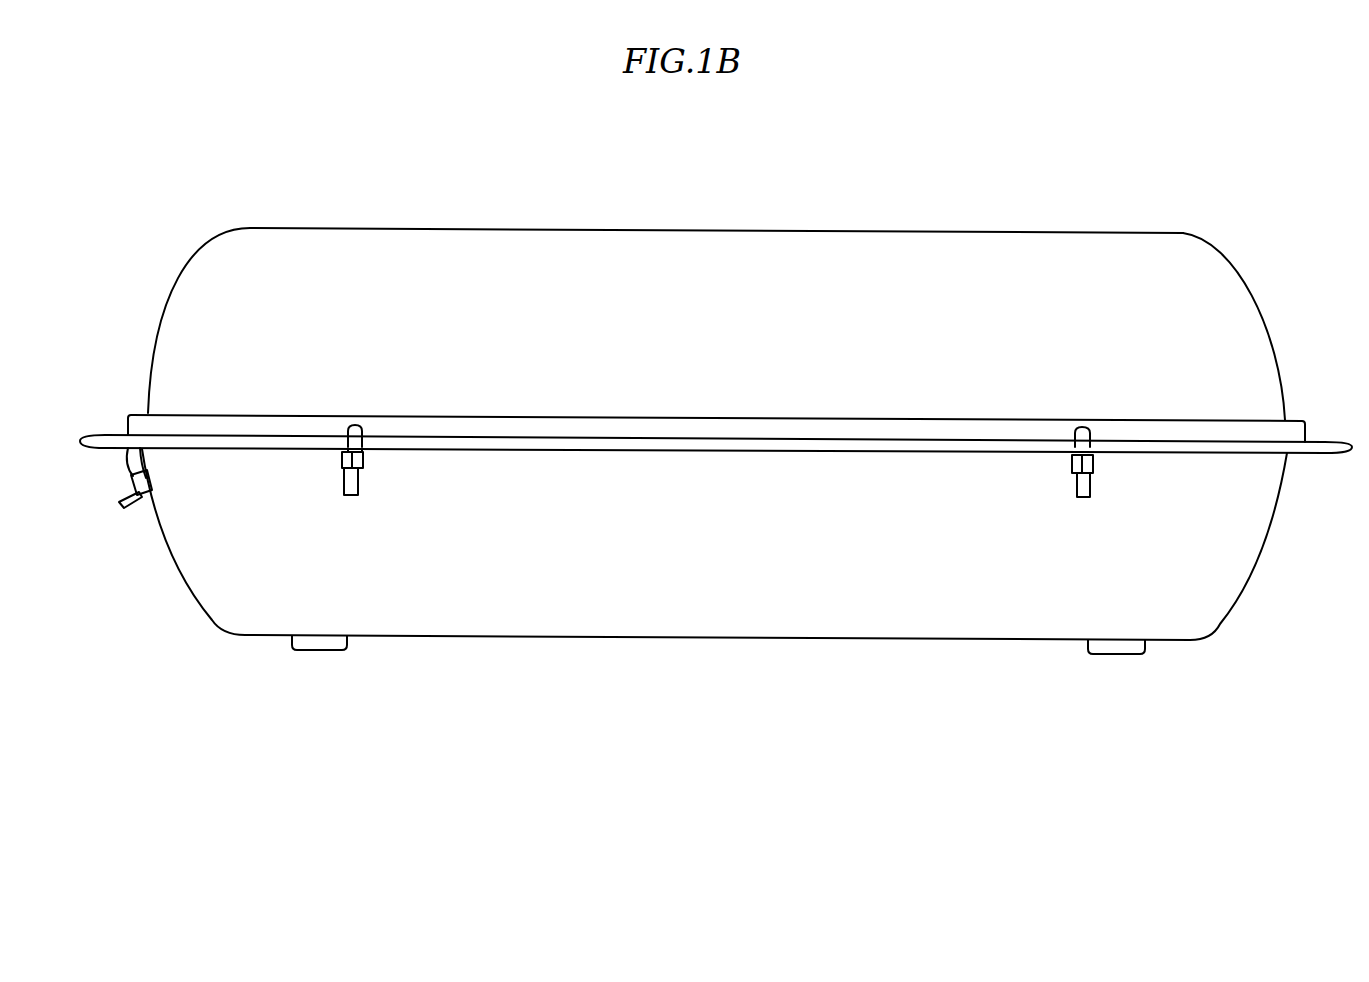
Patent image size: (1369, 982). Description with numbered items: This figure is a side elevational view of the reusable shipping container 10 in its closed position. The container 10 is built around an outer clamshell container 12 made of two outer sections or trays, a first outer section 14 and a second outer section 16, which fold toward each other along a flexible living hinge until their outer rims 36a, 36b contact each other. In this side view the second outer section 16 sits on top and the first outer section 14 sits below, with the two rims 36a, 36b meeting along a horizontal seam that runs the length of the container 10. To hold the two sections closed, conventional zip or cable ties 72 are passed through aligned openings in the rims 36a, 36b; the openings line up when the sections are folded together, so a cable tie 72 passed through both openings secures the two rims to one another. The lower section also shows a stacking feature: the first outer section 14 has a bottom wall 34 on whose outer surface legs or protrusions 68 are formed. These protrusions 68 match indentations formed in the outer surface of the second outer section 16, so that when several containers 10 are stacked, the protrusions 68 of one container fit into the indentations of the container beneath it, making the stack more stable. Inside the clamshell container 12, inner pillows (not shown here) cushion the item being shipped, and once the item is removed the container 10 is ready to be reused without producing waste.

The reusable shipping container 10 is at (1033, 200).
The outer clamshell container 12 is at (1219, 237).
The first outer section 14 is at (530, 638).
The second outer section 16 is at (362, 228).
The bottom wall 34 is at (805, 640).
The outer rim 36a is at (1330, 458).
The outer rim 36b is at (1318, 433).
The legs or protrusions 68 is at (320, 650).
The zip or cable ties 72 is at (140, 505).